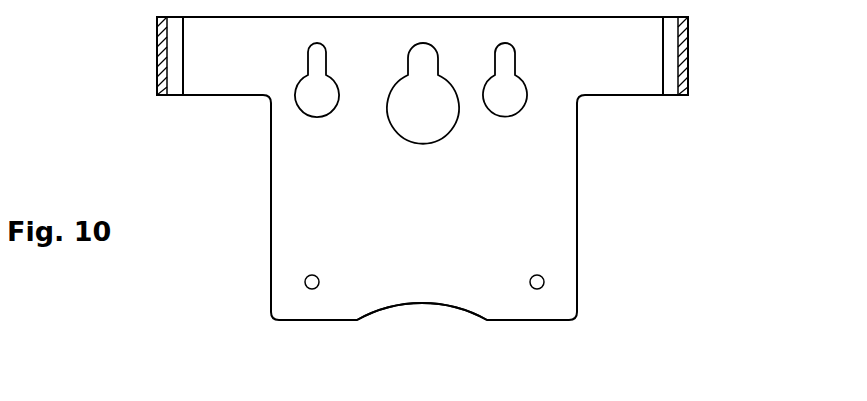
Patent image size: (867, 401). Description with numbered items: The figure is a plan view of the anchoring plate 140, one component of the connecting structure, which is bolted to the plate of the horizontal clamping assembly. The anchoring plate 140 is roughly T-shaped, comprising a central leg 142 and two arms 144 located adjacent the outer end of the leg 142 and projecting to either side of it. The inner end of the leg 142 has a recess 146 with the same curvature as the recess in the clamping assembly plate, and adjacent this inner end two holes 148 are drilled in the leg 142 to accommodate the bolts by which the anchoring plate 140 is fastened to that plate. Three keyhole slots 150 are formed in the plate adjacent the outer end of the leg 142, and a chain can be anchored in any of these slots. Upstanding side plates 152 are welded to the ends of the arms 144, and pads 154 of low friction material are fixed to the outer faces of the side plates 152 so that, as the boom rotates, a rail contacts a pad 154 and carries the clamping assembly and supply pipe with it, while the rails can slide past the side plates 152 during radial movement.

The anchoring plate 140 is at (590, 149).
The central leg 142 is at (283, 180).
The arms 144 is at (210, 95).
The recess 146 is at (412, 305).
The holes 148 is at (305, 282).
The keyhole slots 150 is at (397, 118).
The side plates 152 is at (172, 52).
The pads 154 is at (687, 60).